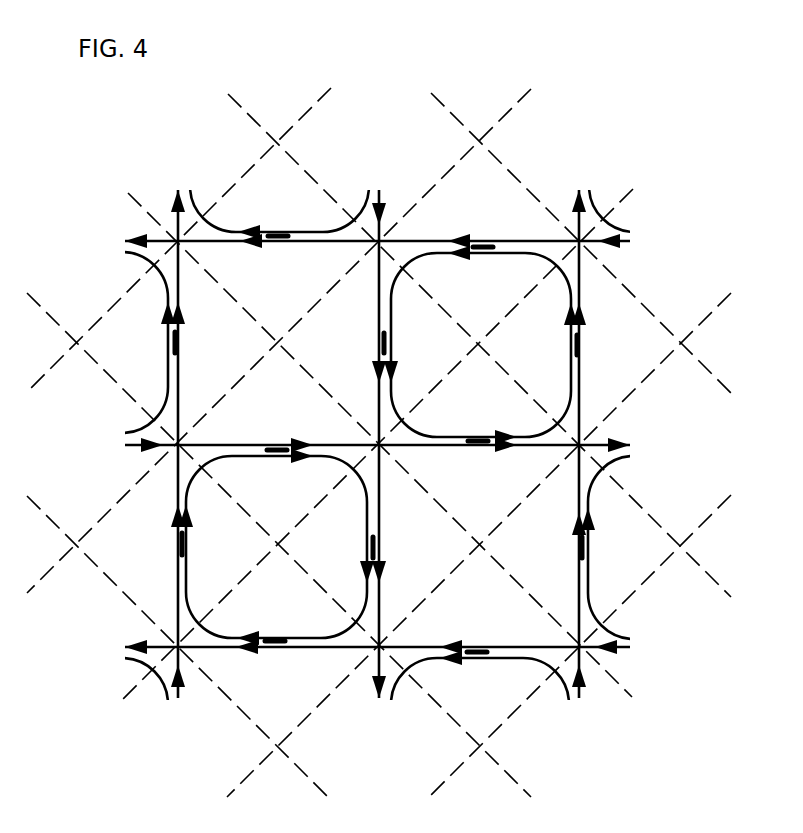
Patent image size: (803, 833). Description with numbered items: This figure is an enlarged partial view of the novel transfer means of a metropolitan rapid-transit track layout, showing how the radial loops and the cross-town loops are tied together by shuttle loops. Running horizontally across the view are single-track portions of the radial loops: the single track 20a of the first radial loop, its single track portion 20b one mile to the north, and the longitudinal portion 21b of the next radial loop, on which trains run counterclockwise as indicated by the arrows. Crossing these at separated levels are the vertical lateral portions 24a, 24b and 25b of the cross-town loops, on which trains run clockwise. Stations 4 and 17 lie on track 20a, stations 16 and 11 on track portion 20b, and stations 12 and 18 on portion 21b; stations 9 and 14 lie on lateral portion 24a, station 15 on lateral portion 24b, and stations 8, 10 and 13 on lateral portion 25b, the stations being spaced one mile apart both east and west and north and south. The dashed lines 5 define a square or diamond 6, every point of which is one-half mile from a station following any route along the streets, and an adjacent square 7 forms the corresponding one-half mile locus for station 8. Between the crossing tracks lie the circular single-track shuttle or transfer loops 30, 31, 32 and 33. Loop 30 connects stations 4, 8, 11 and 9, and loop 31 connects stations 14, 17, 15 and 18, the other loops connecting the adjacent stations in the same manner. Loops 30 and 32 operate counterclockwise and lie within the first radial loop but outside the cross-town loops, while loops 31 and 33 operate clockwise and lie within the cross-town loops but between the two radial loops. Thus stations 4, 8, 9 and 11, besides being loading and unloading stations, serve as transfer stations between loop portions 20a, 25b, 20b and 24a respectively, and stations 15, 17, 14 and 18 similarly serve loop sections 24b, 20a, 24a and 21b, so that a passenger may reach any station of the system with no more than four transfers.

The station 4 is at (483, 438).
The lines 5 is at (422, 489).
The square or diamond 6 is at (496, 485).
The square 7 is at (634, 368).
The station 8 is at (581, 342).
The station 9 is at (388, 341).
The station 10 is at (178, 343).
The station 11 is at (490, 244).
The station 12 is at (476, 649).
The station 13 is at (586, 547).
The station 14 is at (377, 546).
The station 15 is at (184, 544).
The station 16 is at (283, 236).
The station 17 is at (283, 447).
The station 18 is at (282, 639).
The single track 20a is at (206, 445).
The single track portion 20b is at (304, 244).
The longitudinal portion 21b is at (297, 649).
The lateral portion 24a is at (379, 602).
The lateral portion 24b is at (174, 598).
The lateral portion 25b is at (581, 402).
The circular loop 30 is at (412, 434).
The circular loop 31 is at (366, 500).
The circular loop 32 is at (170, 383).
The circular loop 33 is at (591, 605).